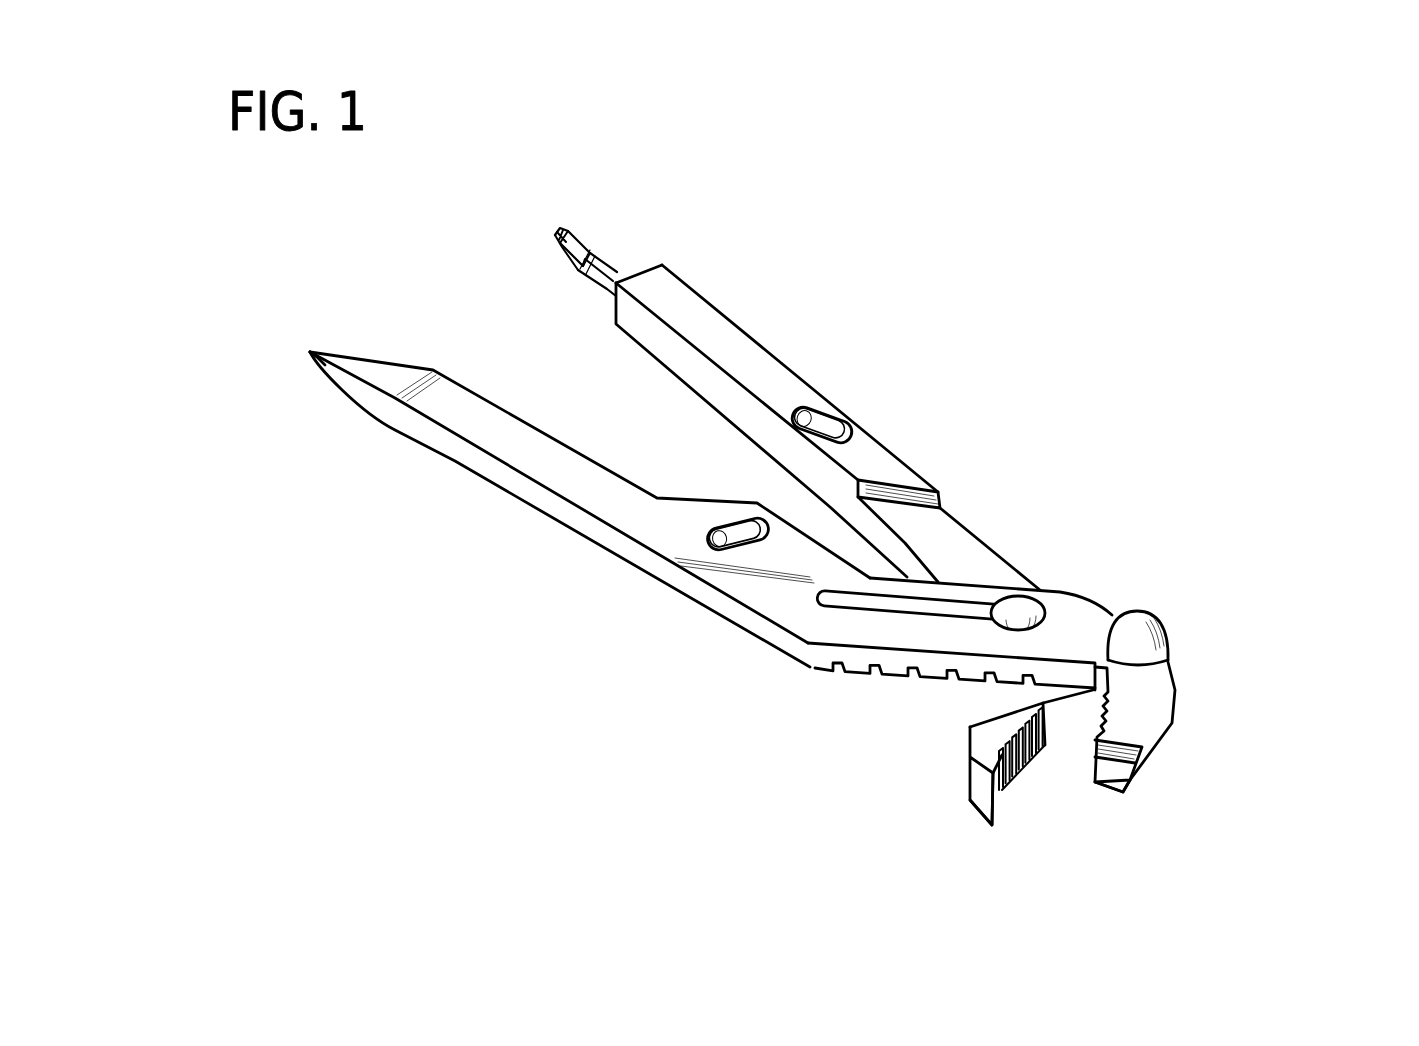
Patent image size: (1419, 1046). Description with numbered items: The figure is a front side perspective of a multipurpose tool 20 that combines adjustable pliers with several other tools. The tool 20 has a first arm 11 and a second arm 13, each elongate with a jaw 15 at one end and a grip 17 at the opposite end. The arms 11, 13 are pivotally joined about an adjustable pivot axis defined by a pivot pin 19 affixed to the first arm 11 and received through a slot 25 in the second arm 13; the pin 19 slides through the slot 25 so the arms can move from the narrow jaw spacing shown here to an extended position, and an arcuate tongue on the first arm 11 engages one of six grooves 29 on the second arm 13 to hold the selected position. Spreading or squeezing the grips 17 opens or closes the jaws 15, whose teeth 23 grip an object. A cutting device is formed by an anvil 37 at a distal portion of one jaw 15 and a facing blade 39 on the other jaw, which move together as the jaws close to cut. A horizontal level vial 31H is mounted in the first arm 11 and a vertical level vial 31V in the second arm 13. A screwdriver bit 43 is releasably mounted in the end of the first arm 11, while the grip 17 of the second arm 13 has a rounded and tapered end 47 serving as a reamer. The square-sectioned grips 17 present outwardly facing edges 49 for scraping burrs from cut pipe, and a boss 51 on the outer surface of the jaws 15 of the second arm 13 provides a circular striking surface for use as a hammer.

The multipurpose tool 20 is at (1121, 253).
The first arm 11 is at (902, 384).
The second arm 13 is at (422, 538).
The grip 17 is at (683, 310).
The outwardly facing edges 49 is at (785, 362).
The screwdriver bit 43 is at (578, 243).
The rounded and tapered end 47 is at (308, 354).
The horizontal level vial 31H is at (836, 436).
The vertical level vial 31V is at (716, 546).
The pivot pin 19 is at (1022, 609).
The slot 25 is at (845, 604).
The grooves 29 is at (1027, 684).
The jaw 15 is at (990, 755).
The teeth 23 is at (1027, 755).
The anvil 37 is at (1000, 798).
The blade 39 is at (1093, 775).
The boss 51 is at (1167, 636).